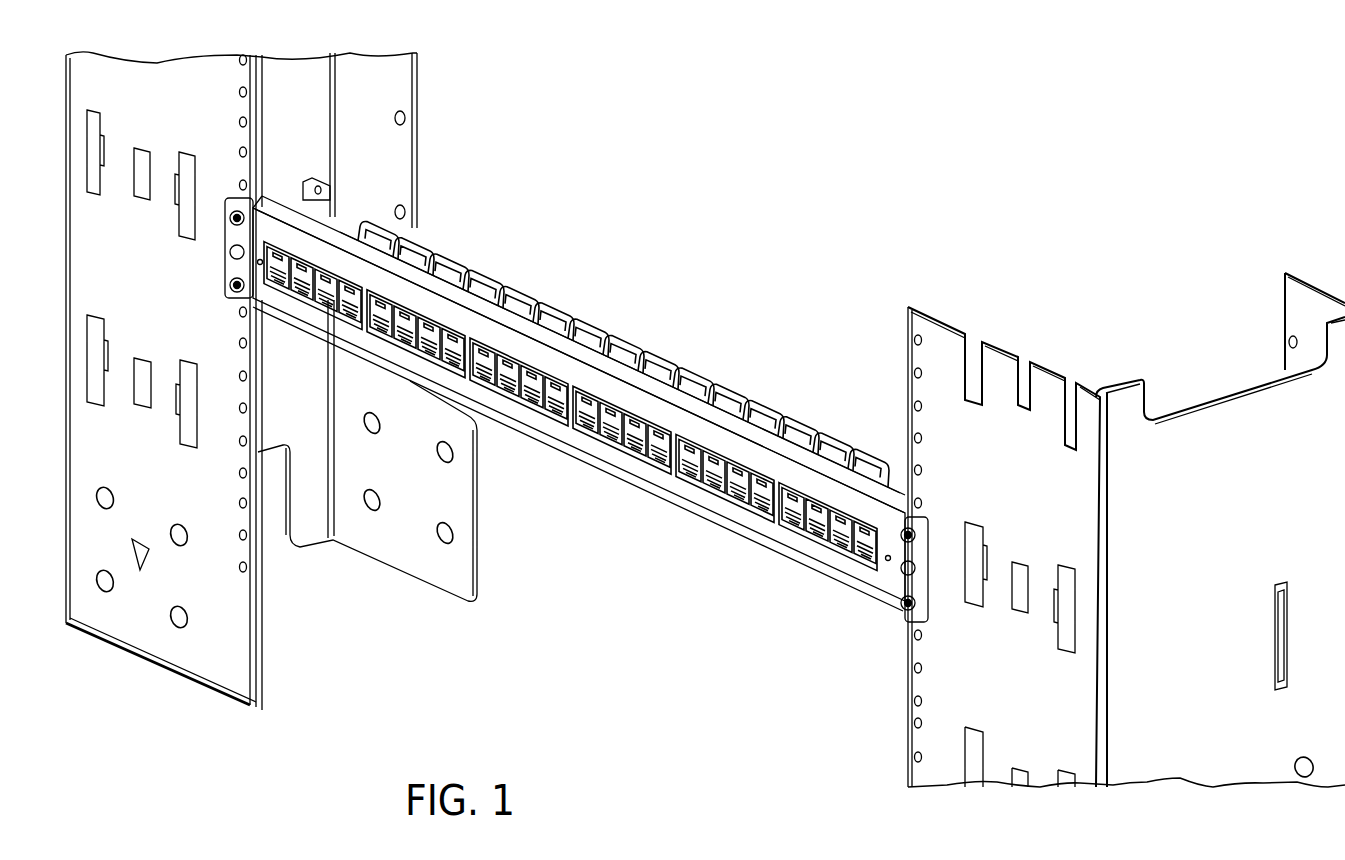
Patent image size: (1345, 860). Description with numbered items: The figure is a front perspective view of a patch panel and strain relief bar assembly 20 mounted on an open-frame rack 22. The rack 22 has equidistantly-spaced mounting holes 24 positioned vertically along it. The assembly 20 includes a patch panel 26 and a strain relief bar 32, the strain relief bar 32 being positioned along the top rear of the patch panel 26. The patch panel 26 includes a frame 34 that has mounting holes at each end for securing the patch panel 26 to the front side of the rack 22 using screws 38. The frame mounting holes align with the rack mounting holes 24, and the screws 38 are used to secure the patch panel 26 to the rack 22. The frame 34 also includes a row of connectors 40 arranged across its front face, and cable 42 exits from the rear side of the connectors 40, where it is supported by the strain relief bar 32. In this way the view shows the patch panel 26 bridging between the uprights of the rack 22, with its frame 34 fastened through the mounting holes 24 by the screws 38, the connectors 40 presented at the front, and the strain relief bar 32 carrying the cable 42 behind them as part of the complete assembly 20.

The patch panel and strain relief bar assembly 20 is at (576, 373).
The rack 22 is at (950, 322).
The mounting holes 24 is at (913, 723).
The patch panel 26 is at (772, 548).
The strain relief bar 32 is at (806, 415).
The frame 34 is at (885, 578).
The screws 38 is at (903, 612).
The connectors 40 is at (682, 468).
The cable 42 is at (590, 312).